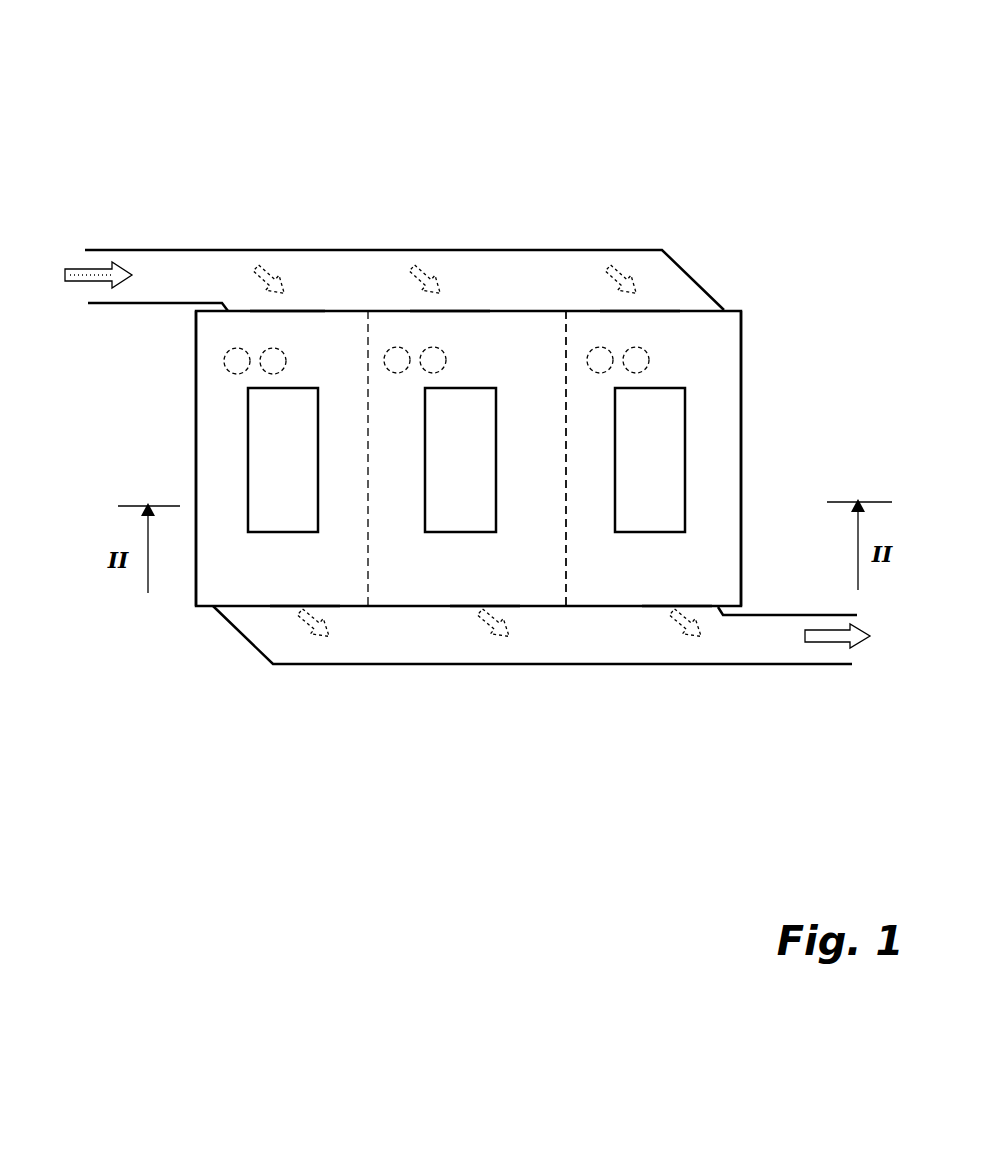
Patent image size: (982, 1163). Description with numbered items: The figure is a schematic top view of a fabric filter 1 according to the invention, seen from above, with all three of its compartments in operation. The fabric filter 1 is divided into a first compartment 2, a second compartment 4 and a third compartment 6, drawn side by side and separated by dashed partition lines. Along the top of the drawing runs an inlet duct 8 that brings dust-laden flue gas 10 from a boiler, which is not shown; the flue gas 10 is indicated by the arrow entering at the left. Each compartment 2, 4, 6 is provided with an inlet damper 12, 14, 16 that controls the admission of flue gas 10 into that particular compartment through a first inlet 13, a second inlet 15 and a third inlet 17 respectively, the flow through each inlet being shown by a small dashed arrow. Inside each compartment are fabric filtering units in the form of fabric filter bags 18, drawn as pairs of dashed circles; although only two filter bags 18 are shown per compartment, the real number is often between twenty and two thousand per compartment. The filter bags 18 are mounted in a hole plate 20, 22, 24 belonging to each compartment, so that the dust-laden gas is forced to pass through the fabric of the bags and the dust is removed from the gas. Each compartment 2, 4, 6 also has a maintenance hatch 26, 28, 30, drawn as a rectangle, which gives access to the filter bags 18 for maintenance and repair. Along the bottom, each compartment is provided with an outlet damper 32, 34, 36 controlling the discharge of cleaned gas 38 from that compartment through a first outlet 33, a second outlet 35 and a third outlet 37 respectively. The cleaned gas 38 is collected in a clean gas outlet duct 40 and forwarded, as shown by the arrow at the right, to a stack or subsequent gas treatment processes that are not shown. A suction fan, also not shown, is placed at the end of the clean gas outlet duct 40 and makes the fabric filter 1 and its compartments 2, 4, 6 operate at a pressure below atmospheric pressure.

The fabric filter 1 is at (384, 96).
The first compartment 2 is at (291, 579).
The second compartment 4 is at (463, 579).
The third compartment 6 is at (655, 572).
The inlet duct 8 is at (163, 249).
The dust-laden flue gas 10 is at (100, 266).
The inlet damper 12 is at (323, 309).
The first inlet 13 is at (273, 310).
The inlet damper 14 is at (485, 309).
The second inlet 15 is at (430, 310).
The inlet damper 16 is at (672, 309).
The third inlet 17 is at (622, 310).
The fabric filter bags 18 is at (243, 345).
The hole plate 20 is at (196, 392).
The hole plate 22 is at (524, 356).
The hole plate 24 is at (716, 360).
The maintenance hatch 26 is at (248, 503).
The maintenance hatch 28 is at (425, 516).
The maintenance hatch 30 is at (686, 424).
The outlet damper 32 is at (270, 608).
The first outlet 33 is at (312, 607).
The outlet damper 34 is at (450, 608).
The second outlet 35 is at (490, 607).
The outlet damper 36 is at (642, 608).
The third outlet 37 is at (684, 607).
The cleaned gas 38 is at (837, 642).
The clean gas outlet duct 40 is at (769, 666).